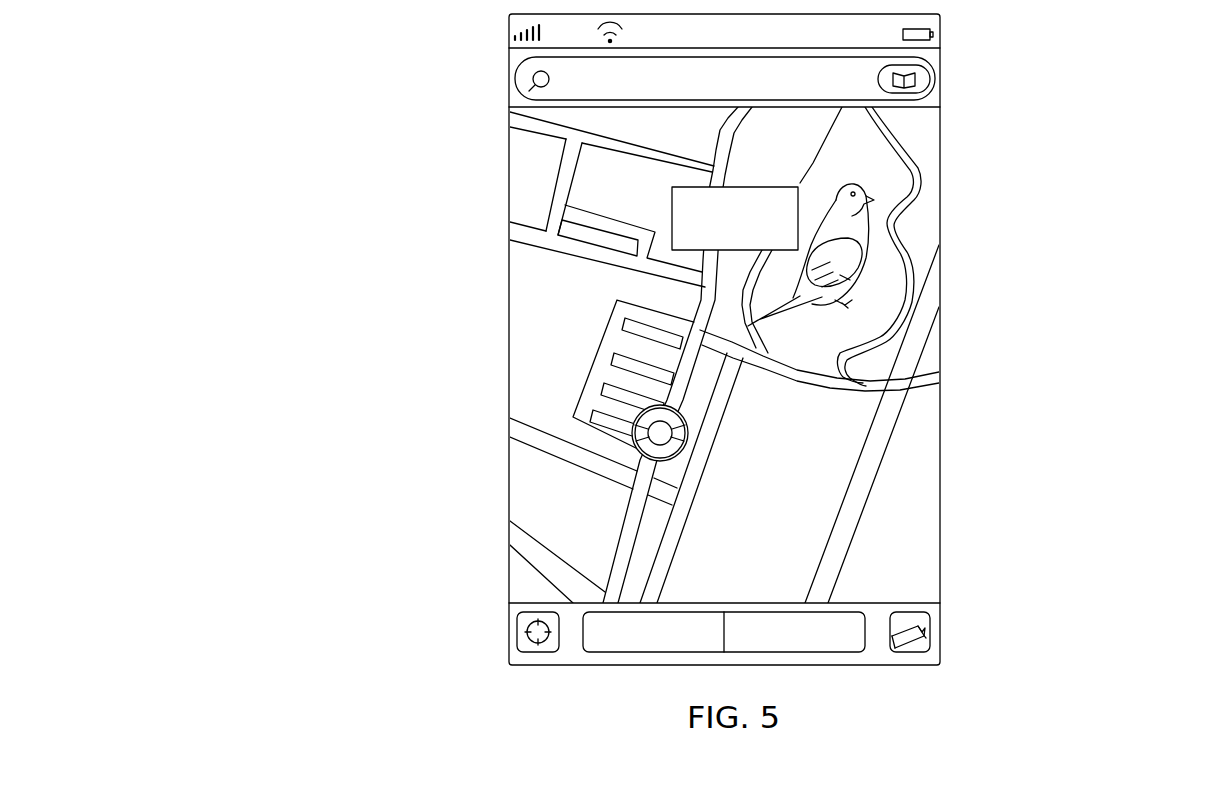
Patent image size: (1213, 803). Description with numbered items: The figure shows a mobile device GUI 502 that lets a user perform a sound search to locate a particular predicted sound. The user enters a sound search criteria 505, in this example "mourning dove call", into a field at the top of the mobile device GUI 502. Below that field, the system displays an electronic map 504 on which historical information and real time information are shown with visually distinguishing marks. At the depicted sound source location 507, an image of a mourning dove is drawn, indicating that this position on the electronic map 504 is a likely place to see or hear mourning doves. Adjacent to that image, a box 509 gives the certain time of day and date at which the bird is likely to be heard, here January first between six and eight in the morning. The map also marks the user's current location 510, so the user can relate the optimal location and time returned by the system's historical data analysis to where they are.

The mobile device GUI 502 is at (490, 278).
The electronic map 504 is at (545, 315).
The sound search criteria 505 is at (531, 78).
The sound source location 507 is at (903, 264).
The box 509 is at (672, 208).
The user's current location 510 is at (688, 433).